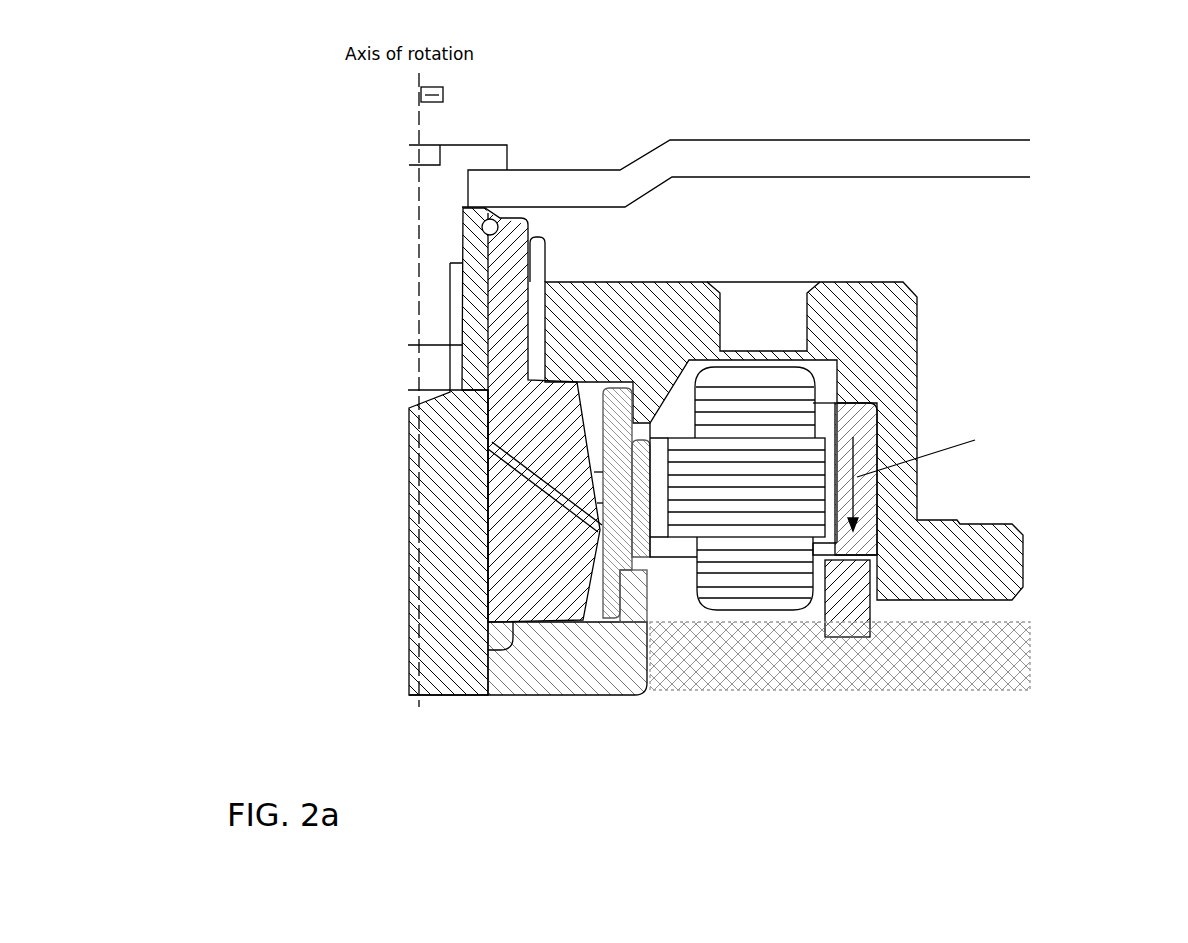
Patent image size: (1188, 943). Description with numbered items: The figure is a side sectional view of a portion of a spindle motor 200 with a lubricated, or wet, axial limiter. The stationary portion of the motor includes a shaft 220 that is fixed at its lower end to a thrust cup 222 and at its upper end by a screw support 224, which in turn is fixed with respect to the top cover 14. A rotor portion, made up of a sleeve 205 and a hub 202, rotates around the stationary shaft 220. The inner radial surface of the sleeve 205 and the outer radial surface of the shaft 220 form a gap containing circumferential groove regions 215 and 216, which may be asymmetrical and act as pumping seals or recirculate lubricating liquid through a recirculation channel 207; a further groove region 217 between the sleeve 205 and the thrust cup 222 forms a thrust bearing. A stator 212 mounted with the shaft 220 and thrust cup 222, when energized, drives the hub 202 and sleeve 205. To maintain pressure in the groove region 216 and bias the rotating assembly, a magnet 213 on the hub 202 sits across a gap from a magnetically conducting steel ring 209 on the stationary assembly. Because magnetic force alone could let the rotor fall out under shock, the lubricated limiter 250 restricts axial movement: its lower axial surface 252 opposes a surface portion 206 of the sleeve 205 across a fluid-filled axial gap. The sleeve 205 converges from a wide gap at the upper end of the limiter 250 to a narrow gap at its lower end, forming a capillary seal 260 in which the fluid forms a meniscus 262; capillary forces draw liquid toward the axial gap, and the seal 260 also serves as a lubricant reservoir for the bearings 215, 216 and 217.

The top cover 14 is at (667, 142).
The spindle motor 200 is at (782, 76).
The hub 202 is at (672, 303).
The sleeve 205 is at (608, 580).
The surface portion of sleeve 206 is at (629, 572).
The recirculation channel 207 is at (580, 528).
The magnetically conducting steel ring 209 is at (850, 600).
The stator 212 is at (777, 580).
The magnet 213 is at (862, 513).
The groove region 215 is at (480, 330).
The groove region 216 is at (483, 573).
The groove region 217 is at (488, 650).
The shaft 220 is at (452, 685).
The thrust cup 222 is at (540, 665).
The screw support 224 is at (462, 163).
The lubricated limiter 250 is at (612, 514).
The axial surface of limiter 252 is at (609, 562).
The capillary seal 260 is at (597, 503).
The meniscus 262 is at (594, 472).